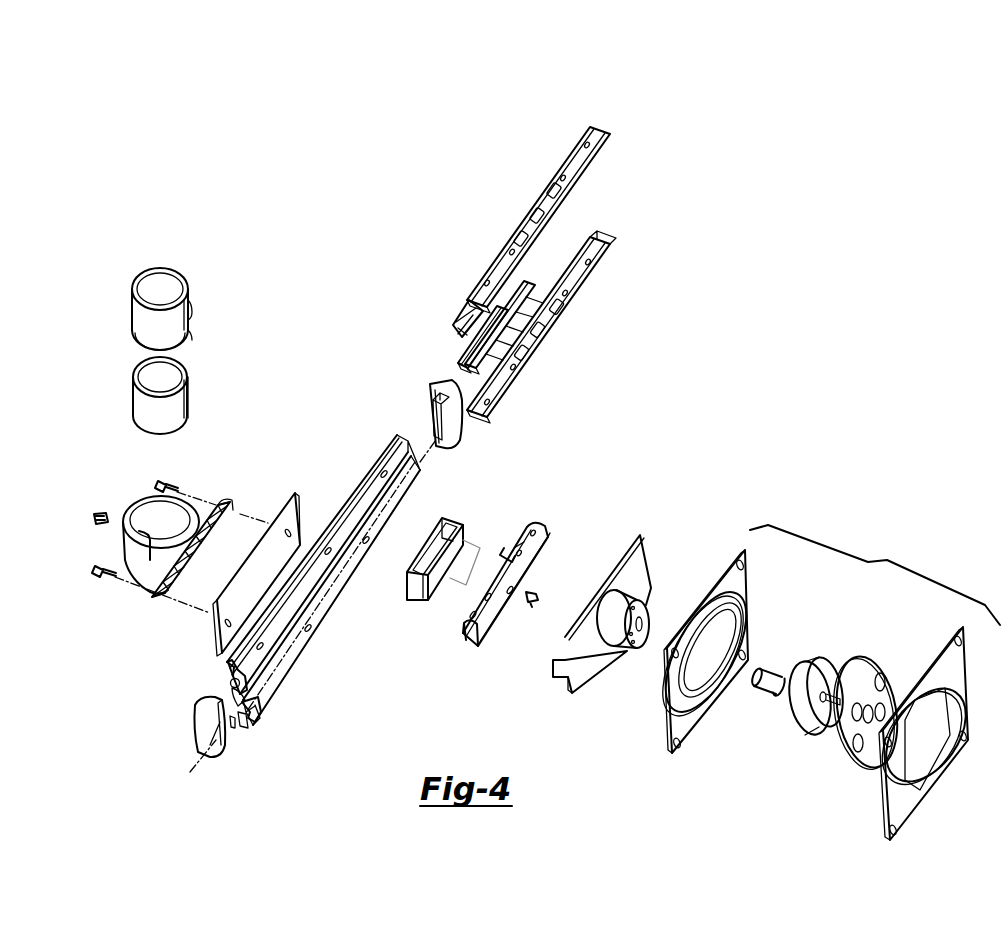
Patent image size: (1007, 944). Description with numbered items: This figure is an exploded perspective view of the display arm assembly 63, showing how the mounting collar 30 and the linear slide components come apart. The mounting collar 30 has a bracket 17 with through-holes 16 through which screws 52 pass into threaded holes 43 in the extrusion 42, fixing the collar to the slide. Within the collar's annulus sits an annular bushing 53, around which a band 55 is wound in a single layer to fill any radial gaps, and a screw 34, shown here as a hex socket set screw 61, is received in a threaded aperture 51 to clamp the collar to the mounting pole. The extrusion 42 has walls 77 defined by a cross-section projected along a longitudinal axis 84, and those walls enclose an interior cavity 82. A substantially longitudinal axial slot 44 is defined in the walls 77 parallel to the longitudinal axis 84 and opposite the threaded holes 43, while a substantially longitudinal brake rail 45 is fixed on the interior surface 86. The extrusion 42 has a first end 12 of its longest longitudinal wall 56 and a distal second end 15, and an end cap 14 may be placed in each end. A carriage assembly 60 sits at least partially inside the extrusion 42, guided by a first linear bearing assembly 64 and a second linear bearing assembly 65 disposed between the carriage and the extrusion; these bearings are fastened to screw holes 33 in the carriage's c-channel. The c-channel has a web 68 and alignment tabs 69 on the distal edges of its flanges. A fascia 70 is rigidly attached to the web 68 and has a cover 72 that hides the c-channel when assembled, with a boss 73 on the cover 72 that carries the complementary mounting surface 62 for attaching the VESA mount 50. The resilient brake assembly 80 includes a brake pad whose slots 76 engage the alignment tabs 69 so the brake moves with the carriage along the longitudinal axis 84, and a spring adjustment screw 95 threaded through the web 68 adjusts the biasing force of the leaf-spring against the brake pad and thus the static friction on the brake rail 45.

The first end 12 is at (245, 730).
The end cap 14 is at (432, 398).
The second end 15 is at (406, 440).
The through-holes 16 is at (207, 490).
The bracket 17 is at (225, 500).
The mounting collar 30 is at (130, 543).
The screw holes 33 is at (526, 548).
The screw 34 is at (95, 517).
The extrusion 42 is at (263, 727).
The threaded holes 43 is at (228, 692).
The substantially longitudinal axial slot 44 is at (290, 662).
The substantially longitudinal brake rail 45 is at (233, 730).
The VESA mount 50 is at (875, 682).
The threaded aperture 51 is at (150, 546).
The screws 52 is at (157, 484).
The annular bushing 53 is at (150, 322).
The band 55 is at (147, 405).
The longest longitudinal wall 56 is at (230, 668).
The carriage assembly 60 is at (577, 723).
The hex socket set screw 61 is at (101, 513).
The complementary mounting surface 62 is at (632, 650).
The display arm assembly 63 is at (690, 358).
The first linear bearing assembly 64 is at (607, 118).
The second linear bearing assembly 65 is at (607, 228).
The web 68 is at (492, 616).
The alignment tabs 69 is at (504, 556).
The fascia 70 is at (624, 601).
The cover 72 is at (640, 542).
The boss 73 is at (656, 605).
The slots 76 is at (415, 570).
The walls 77 is at (390, 434).
The resilient brake assembly 80 is at (507, 504).
The interior cavity 82 is at (231, 681).
The longitudinal axis 84 is at (190, 772).
The interior surface 86 is at (259, 698).
The spring adjustment screw 95 is at (540, 594).